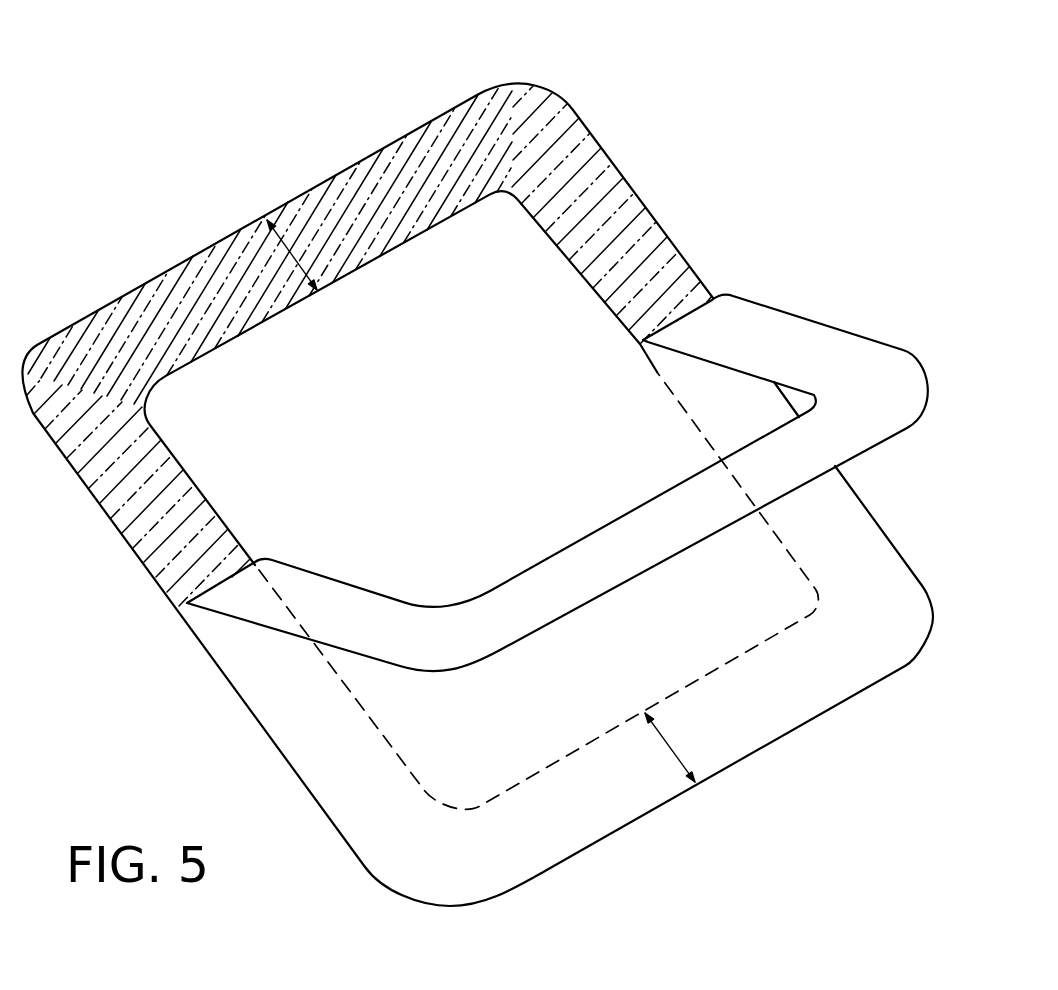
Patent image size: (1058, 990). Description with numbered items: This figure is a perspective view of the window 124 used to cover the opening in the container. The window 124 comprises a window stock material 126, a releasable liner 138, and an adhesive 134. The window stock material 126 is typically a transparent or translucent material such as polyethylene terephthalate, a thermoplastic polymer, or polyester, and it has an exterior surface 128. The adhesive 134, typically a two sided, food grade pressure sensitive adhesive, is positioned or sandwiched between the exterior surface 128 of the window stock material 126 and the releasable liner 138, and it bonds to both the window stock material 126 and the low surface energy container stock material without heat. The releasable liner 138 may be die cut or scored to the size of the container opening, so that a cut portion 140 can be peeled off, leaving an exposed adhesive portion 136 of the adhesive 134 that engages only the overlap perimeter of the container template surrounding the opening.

The window 124 is at (796, 116).
The window stock material 126 is at (574, 112).
The exterior surface 128 is at (419, 400).
The adhesive 134 is at (411, 160).
The exposed adhesive portion 136 is at (289, 256).
The releasable liner 138 is at (883, 343).
The cut portion 140 is at (680, 757).